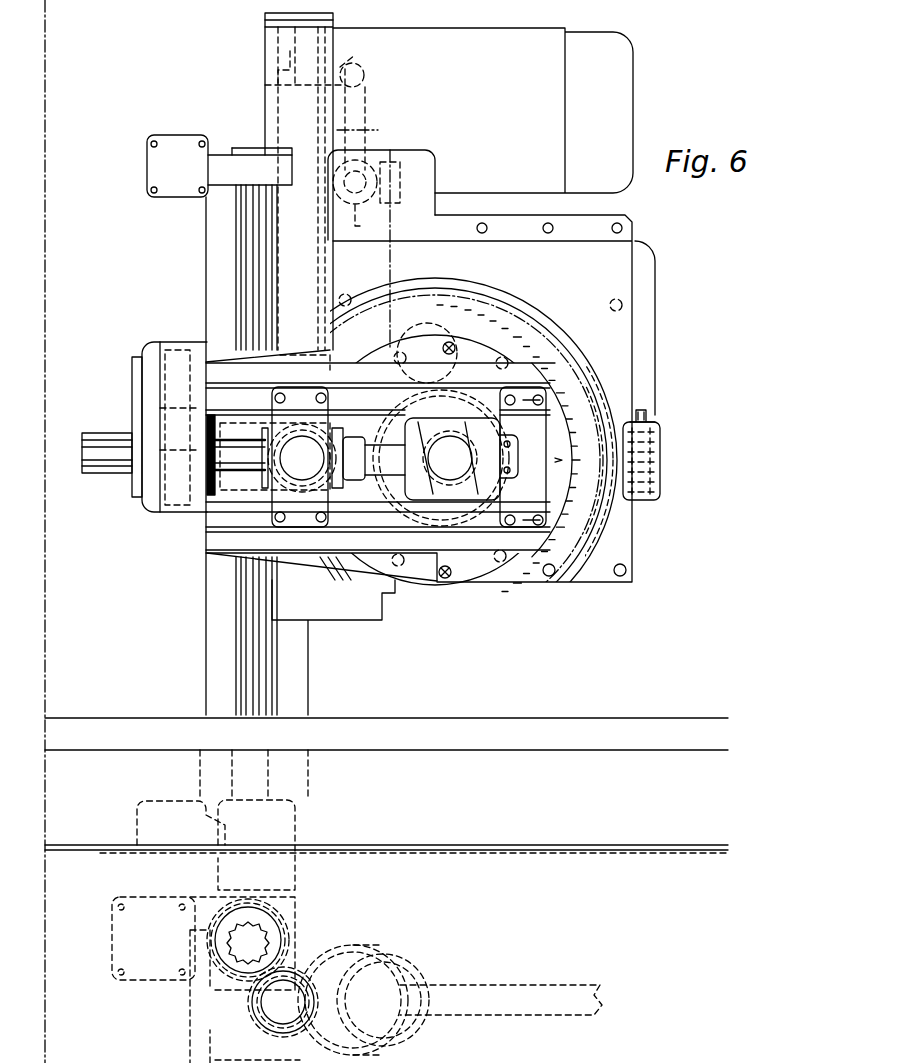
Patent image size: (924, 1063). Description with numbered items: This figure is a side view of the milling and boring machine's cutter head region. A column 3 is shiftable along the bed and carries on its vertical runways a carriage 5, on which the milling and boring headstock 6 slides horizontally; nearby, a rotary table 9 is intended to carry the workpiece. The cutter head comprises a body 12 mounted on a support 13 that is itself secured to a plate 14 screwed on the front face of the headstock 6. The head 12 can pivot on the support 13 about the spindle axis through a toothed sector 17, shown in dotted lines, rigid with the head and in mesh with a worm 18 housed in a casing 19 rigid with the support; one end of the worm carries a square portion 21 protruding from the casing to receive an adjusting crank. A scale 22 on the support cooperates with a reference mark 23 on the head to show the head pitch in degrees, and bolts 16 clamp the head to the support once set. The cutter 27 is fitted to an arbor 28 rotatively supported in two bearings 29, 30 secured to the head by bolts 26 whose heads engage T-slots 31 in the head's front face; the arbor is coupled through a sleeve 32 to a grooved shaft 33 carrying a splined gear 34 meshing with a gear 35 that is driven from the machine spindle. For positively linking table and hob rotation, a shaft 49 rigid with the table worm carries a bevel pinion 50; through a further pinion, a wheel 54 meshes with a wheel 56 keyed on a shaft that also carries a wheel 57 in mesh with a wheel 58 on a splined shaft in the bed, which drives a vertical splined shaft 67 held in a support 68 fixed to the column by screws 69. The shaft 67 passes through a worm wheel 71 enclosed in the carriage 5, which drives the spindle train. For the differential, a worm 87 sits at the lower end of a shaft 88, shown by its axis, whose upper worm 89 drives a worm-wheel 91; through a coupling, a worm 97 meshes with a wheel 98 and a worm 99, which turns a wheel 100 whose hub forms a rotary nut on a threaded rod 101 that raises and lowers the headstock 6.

The column 3 is at (70, 68).
The carriage 5 is at (265, 45).
The milling and boring headstock 6 is at (655, 292).
The rotary table 9 is at (594, 740).
The body of the cutter head 12 is at (440, 600).
The support 13 is at (512, 578).
The plate 14 is at (608, 578).
The bolts 16 is at (455, 345).
The toothed sector 17 is at (595, 548).
The worm 18 is at (656, 478).
The casing 19 is at (661, 446).
The square portion 21 is at (648, 410).
The scale 22 is at (608, 378).
The reference mark 23 is at (558, 464).
The bolts 26 is at (285, 392).
The cutter 27 is at (420, 540).
The arbor 28 is at (395, 478).
The bearing 29 is at (542, 340).
The bearing 30 is at (300, 560).
The T-slots 31 is at (495, 410).
The sleeve 32 is at (356, 438).
The grooved shaft 33 is at (110, 433).
The gear 34 is at (168, 505).
The gear 35 is at (178, 350).
The shaft 49 is at (470, 992).
The bevel pinion 50 is at (372, 950).
The wheel 54 is at (345, 1037).
The wheel 56 is at (268, 1022).
The wheel 57 is at (248, 1012).
The wheel 58 is at (280, 918).
The vertical splined shaft 67 is at (246, 627).
The support 68 is at (214, 168).
The screws 69 is at (154, 197).
The worm wheel 71 is at (210, 500).
The worm 87 is at (380, 357).
The shaft 88 is at (390, 255).
The worm 89 is at (400, 180).
The worm-wheel 91 is at (372, 172).
The worm 97 is at (370, 218).
The wheel 98 is at (366, 108).
The worm 99 is at (364, 70).
The wheel 100 is at (355, 55).
The threaded rod 101 is at (333, 16).